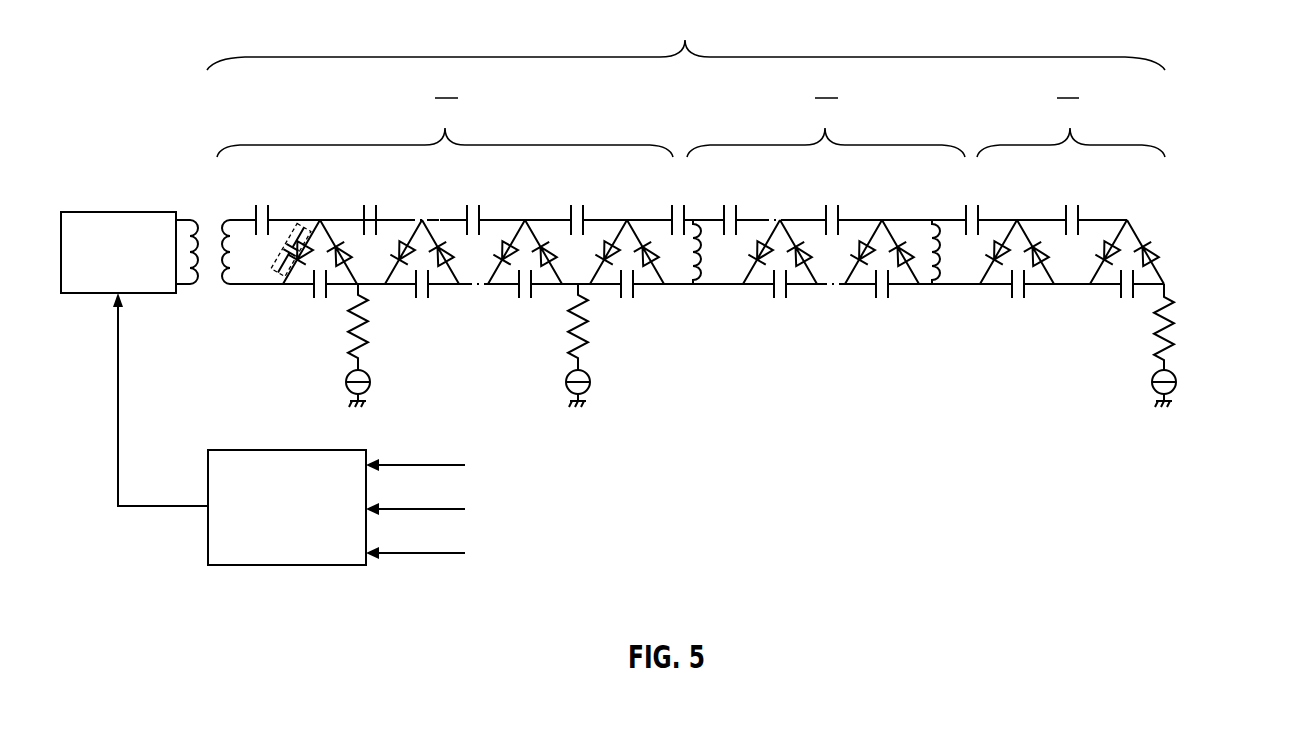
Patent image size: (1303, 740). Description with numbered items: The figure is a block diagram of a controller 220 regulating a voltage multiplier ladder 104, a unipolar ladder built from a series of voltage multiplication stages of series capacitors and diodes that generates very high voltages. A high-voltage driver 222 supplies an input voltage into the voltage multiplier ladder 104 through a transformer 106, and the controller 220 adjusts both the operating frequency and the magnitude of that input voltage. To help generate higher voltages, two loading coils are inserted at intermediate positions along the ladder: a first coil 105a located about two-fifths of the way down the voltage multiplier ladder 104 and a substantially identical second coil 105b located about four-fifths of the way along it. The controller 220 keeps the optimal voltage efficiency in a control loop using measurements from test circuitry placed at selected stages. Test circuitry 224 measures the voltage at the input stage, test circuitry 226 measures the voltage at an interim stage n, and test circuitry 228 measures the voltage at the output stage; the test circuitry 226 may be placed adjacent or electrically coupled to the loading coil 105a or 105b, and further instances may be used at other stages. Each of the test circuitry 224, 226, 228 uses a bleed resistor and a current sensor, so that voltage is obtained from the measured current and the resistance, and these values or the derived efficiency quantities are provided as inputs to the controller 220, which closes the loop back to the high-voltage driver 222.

The voltage multiplier ladder 104 is at (1178, 170).
The first coil 105a is at (698, 218).
The second coil 105b is at (940, 218).
The transformer 106 is at (205, 212).
The controller 220 is at (268, 450).
The high-voltage driver 222 is at (122, 211).
The test circuitry 224 is at (404, 295).
The test circuitry 226 is at (638, 295).
The test circuitry 228 is at (1212, 293).